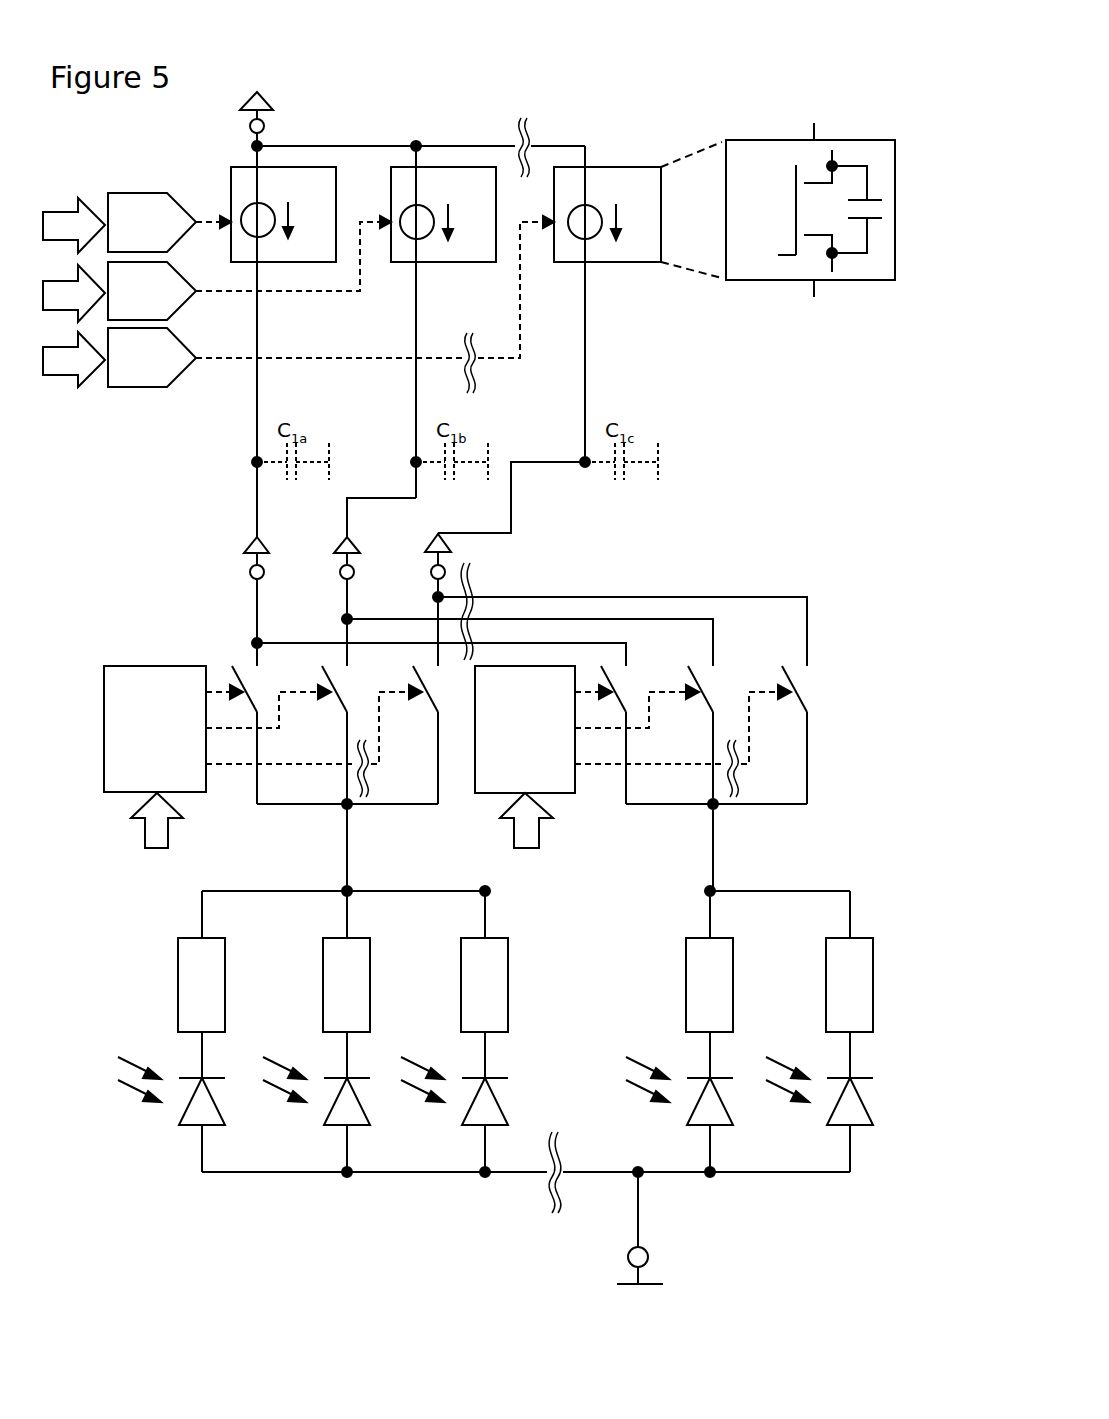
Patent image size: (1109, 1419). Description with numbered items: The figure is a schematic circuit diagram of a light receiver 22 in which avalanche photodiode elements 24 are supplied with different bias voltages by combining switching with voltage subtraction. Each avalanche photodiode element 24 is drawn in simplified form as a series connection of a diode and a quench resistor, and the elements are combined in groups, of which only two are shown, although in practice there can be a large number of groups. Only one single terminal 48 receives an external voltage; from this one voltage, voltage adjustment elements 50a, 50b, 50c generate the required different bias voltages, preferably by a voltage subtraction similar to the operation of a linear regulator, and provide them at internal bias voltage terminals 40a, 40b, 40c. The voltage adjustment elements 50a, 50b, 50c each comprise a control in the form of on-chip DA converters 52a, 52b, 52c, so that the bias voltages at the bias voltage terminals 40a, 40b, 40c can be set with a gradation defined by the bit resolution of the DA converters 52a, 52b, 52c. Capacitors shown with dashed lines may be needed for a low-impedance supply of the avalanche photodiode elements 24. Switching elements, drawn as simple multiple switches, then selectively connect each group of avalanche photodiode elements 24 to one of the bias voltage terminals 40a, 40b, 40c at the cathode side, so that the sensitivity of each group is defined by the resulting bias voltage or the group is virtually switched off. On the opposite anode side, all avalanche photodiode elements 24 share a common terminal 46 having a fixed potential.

The light receiver 22 is at (778, 153).
The avalanche photodiode elements 24 is at (530, 1031).
The bias voltage terminal 40a is at (219, 574).
The bias voltage terminal 40b is at (320, 574).
The bias voltage terminal 40c is at (410, 574).
The common terminal 46 is at (595, 1241).
The terminal 48 is at (228, 106).
The voltage adjustment element 50a is at (302, 183).
The voltage adjustment element 50b is at (443, 182).
The voltage adjustment element 50c is at (607, 182).
The DA converter 52a is at (137, 200).
The DA converter 52b is at (217, 328).
The DA converter 52c is at (298, 346).